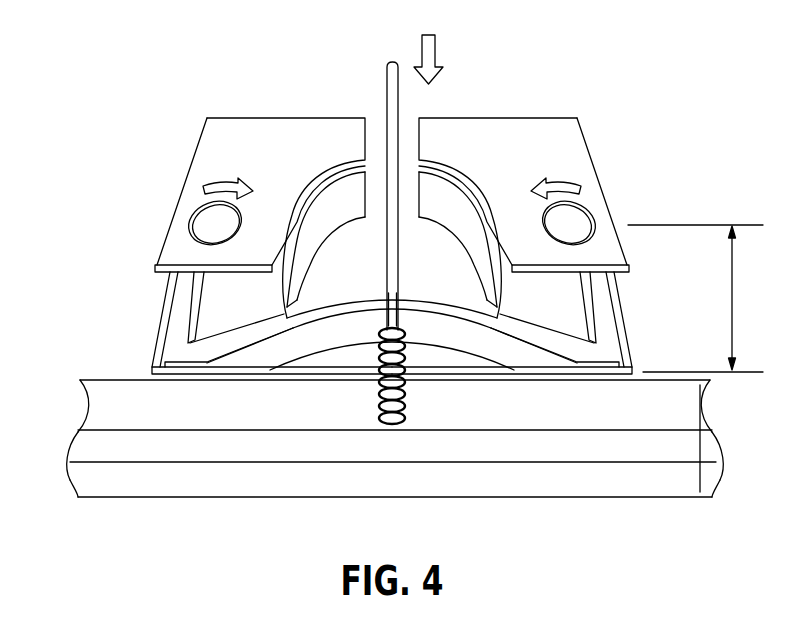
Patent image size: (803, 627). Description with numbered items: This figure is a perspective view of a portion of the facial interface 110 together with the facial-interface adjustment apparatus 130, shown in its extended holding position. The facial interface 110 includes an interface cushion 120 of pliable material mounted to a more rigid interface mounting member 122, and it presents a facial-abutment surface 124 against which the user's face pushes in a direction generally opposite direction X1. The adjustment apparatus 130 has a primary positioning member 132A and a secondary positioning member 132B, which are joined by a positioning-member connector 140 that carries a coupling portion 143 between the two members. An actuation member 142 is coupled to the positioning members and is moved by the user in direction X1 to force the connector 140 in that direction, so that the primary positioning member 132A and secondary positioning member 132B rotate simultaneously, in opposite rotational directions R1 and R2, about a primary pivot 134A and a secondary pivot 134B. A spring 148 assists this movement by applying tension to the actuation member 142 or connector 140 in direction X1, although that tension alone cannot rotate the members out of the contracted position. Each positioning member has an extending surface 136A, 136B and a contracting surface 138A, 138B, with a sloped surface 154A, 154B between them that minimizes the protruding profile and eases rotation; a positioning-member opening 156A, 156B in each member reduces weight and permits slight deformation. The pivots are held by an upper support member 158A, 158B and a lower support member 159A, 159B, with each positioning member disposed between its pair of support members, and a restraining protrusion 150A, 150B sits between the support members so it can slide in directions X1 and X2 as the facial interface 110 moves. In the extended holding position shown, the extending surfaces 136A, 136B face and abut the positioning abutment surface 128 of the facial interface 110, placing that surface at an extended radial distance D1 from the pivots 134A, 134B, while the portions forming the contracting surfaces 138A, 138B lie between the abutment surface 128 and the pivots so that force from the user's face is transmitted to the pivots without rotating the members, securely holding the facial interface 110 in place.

The facial interface 110 is at (72, 482).
The interface cushion 120 is at (72, 446).
The interface mounting member 122 is at (85, 402).
The facial-abutment surface 124 is at (685, 485).
The positioning abutment surface 128 is at (336, 358).
The facial-interface adjustment apparatus 130 is at (140, 158).
The primary positioning member 132A is at (296, 352).
The secondary positioning member 132B is at (487, 352).
The primary pivot 134A is at (192, 218).
The secondary pivot 134B is at (592, 212).
The extending surface 136A is at (238, 365).
The extending surface 136B is at (545, 365).
The contracting surface 138A is at (170, 286).
The contracting surface 138B is at (566, 312).
The positioning-member connector 140 is at (440, 347).
The actuation member 142 is at (399, 194).
The coupling portion 143 is at (403, 298).
The spring 148 is at (383, 424).
The restraining protrusion 150A is at (162, 362).
The restraining protrusion 150B is at (628, 340).
The sloped surface 154A is at (177, 368).
The sloped surface 154B is at (607, 368).
The positioning-member opening 156A is at (144, 283).
The positioning-member opening 156B is at (640, 287).
The upper support member 158A is at (235, 188).
The upper support member 158B is at (547, 189).
The lower support member 159A is at (347, 222).
The lower support member 159B is at (437, 222).